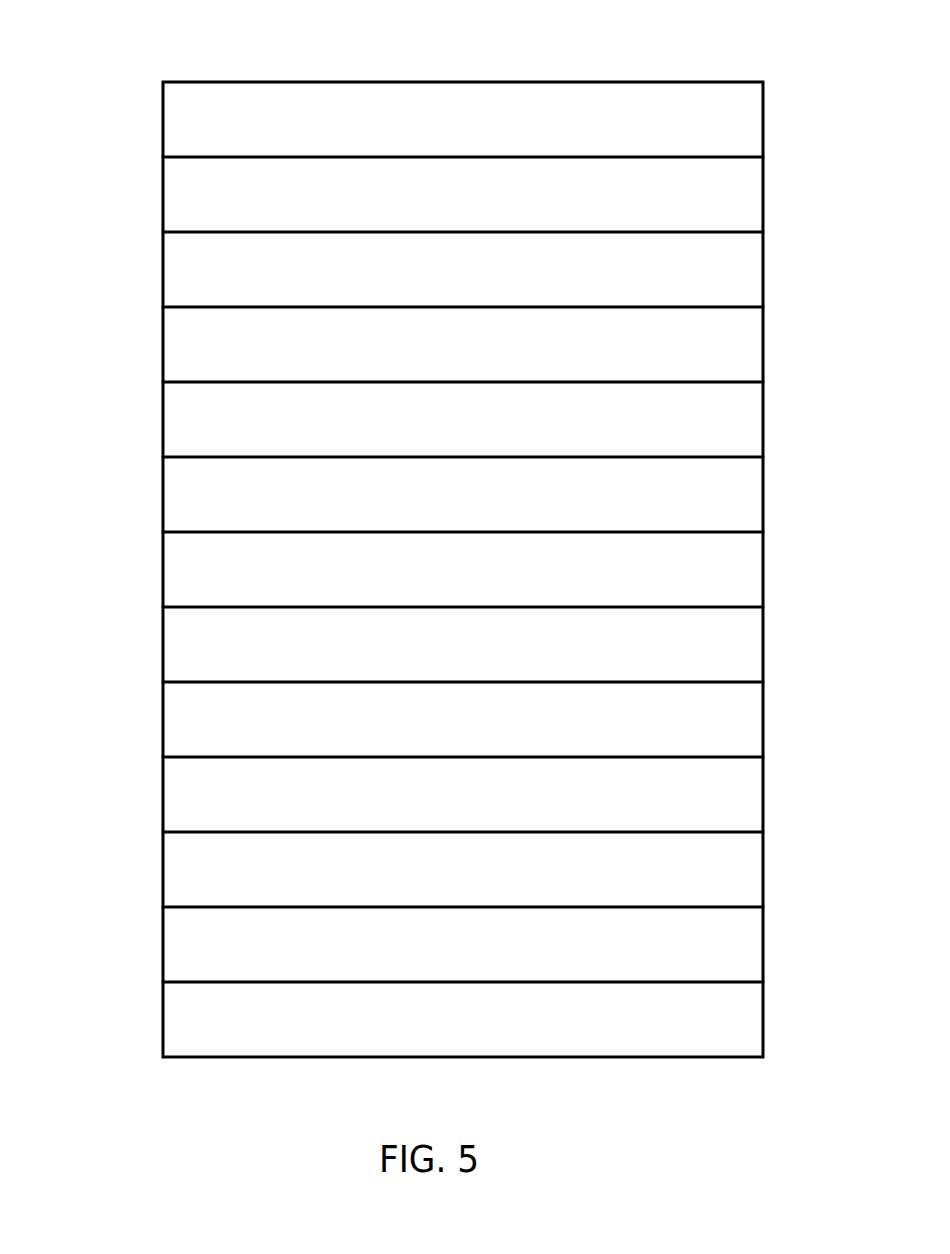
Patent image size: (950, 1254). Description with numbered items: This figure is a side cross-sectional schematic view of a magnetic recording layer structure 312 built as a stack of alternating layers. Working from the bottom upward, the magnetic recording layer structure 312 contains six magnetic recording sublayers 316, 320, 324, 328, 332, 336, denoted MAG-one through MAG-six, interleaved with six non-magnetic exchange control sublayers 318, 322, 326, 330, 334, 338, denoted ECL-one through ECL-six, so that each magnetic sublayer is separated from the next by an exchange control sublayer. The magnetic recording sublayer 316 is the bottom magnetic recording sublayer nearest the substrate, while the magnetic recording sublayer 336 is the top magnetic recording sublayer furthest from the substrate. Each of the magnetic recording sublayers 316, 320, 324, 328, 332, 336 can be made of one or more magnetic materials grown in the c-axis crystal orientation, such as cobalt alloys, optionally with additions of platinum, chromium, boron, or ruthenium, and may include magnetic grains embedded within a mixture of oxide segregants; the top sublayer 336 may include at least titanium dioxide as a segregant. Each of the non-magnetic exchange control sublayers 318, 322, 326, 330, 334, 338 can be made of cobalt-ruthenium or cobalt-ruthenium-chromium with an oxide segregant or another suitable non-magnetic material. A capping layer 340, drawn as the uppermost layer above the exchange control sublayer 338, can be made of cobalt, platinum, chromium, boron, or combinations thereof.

The magnetic recording layer structure 312 is at (105, 68).
The magnetic recording sublayer MAG-1 316 is at (763, 1008).
The non-magnetic exchange control sublayer ECL-1 318 is at (763, 936).
The magnetic recording sublayer MAG-2 320 is at (763, 861).
The non-magnetic exchange control sublayer ECL-2 322 is at (763, 786).
The magnetic recording sublayer MAG-3 324 is at (763, 711).
The non-magnetic exchange control sublayer ECL-3 326 is at (763, 636).
The magnetic recording sublayer MAG-4 328 is at (763, 561).
The non-magnetic exchange control sublayer ECL-4 330 is at (763, 486).
The magnetic recording sublayer MAG-5 332 is at (763, 411).
The non-magnetic exchange control sublayer ECL-5 334 is at (763, 336).
The magnetic recording sublayer MAG-6 336 is at (763, 261).
The non-magnetic exchange control sublayer ECL-6 338 is at (763, 186).
The capping layer 340 is at (763, 121).